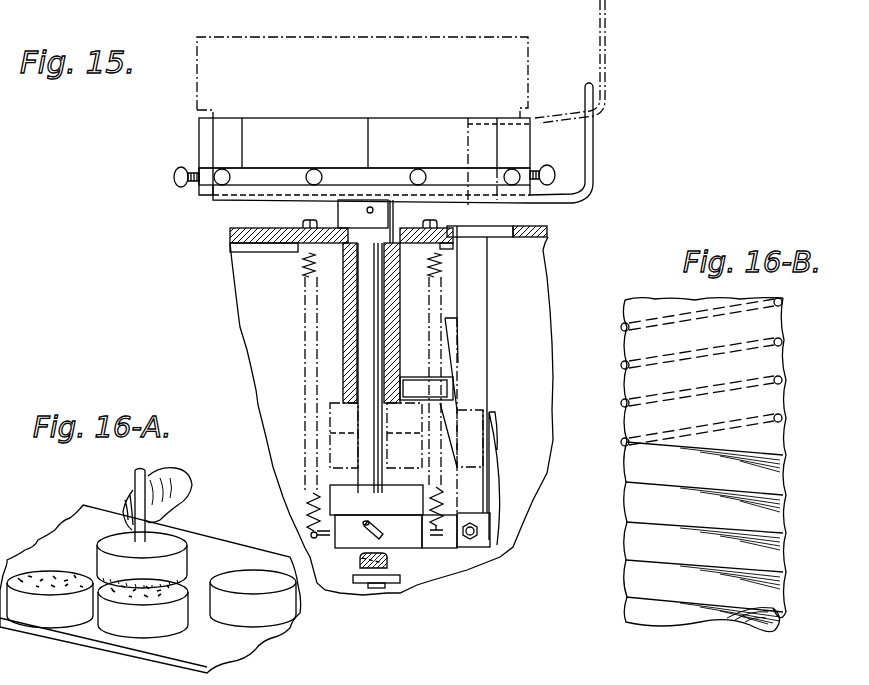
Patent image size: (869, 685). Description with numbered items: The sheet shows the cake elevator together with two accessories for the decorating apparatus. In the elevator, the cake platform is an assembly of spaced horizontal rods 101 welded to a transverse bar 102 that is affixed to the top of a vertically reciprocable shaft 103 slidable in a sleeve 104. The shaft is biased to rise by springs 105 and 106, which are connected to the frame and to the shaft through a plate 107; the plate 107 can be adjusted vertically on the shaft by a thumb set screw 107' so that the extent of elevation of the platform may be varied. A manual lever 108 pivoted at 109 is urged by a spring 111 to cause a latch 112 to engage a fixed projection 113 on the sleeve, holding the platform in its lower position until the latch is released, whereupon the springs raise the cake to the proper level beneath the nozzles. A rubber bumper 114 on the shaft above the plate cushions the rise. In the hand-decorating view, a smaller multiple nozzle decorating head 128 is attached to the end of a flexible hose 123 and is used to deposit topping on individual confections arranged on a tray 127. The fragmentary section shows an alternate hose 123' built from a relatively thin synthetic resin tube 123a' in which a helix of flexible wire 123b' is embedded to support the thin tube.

In FIG. 15, the horizontal rods 101 is at (228, 174).
In FIG. 15, the transverse bar 102 is at (270, 190).
In FIG. 15, the vertically reciprocable shaft 103 is at (368, 292).
In FIG. 15, the sleeve 104 is at (345, 318).
In FIG. 15, the spring 105 is at (302, 268).
In FIG. 15, the spring 106 is at (440, 270).
In FIG. 15, the plate 107 is at (396, 546).
In FIG. 15, the thumb set screw 107' is at (356, 546).
In FIG. 15, the manual lever 108 is at (476, 308).
In FIG. 15, the pivot 109 is at (470, 540).
In FIG. 15, the spring 111 is at (500, 440).
In FIG. 15, the latch 112 is at (453, 406).
In FIG. 15, the fixed projection 113 is at (445, 377).
In FIG. 15, the rubber bumper 114 is at (340, 492).
In FIG. 16A, the flexible hose 123 is at (129, 505).
In FIG. 16A, the tray 127 is at (100, 640).
In FIG. 16A, the multiple nozzle decorating head 128 is at (178, 557).
In FIG. 16B, the thin tube 123a' is at (678, 411).
In FIG. 16B, the helix of flexible wire 123b' is at (677, 360).
In FIG. 16B, the alternate hose 123' is at (677, 533).